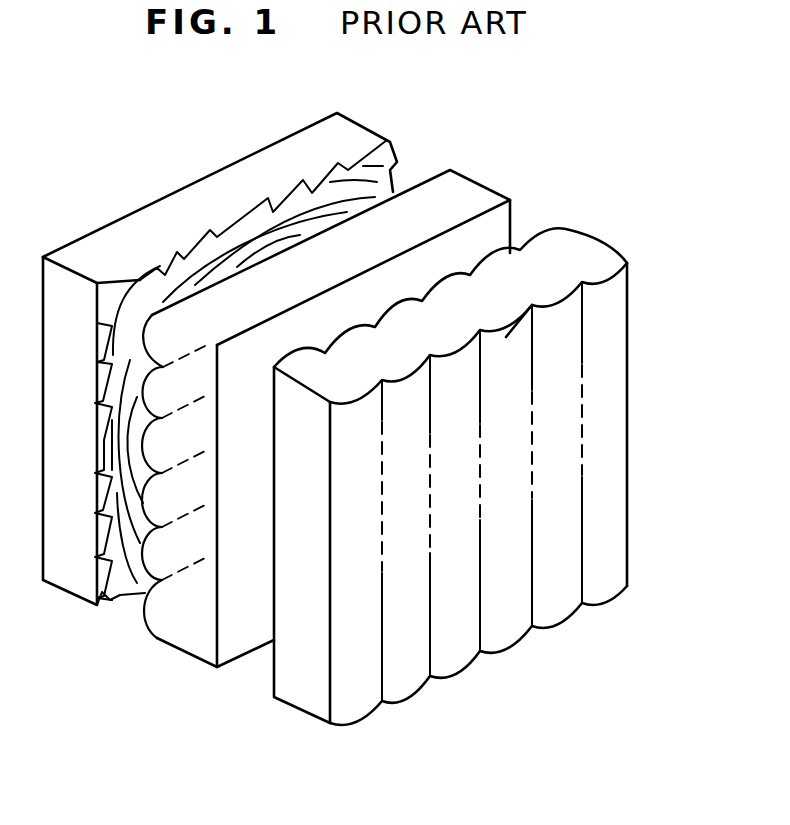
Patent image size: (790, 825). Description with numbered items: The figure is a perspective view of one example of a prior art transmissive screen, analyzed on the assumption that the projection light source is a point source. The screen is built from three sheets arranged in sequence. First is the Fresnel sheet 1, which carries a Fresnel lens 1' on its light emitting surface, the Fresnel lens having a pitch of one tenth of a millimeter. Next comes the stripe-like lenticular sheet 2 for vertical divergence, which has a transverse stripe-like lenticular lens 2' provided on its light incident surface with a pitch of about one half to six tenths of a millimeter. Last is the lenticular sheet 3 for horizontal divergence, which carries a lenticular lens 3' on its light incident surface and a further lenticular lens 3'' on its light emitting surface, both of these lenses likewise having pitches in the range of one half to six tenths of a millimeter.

The Fresnel sheet 1 is at (220, 379).
The Fresnel lens 1' is at (241, 405).
The stripe-like lenticular sheet for vertical divergence 2 is at (331, 449).
The transverse stripe-like lenticular lens 2' is at (144, 505).
The lenticular sheet for horizontal divergence 3 is at (450, 503).
The lenticular lens 3' is at (537, 256).
The lenticular lens 3'' is at (636, 442).